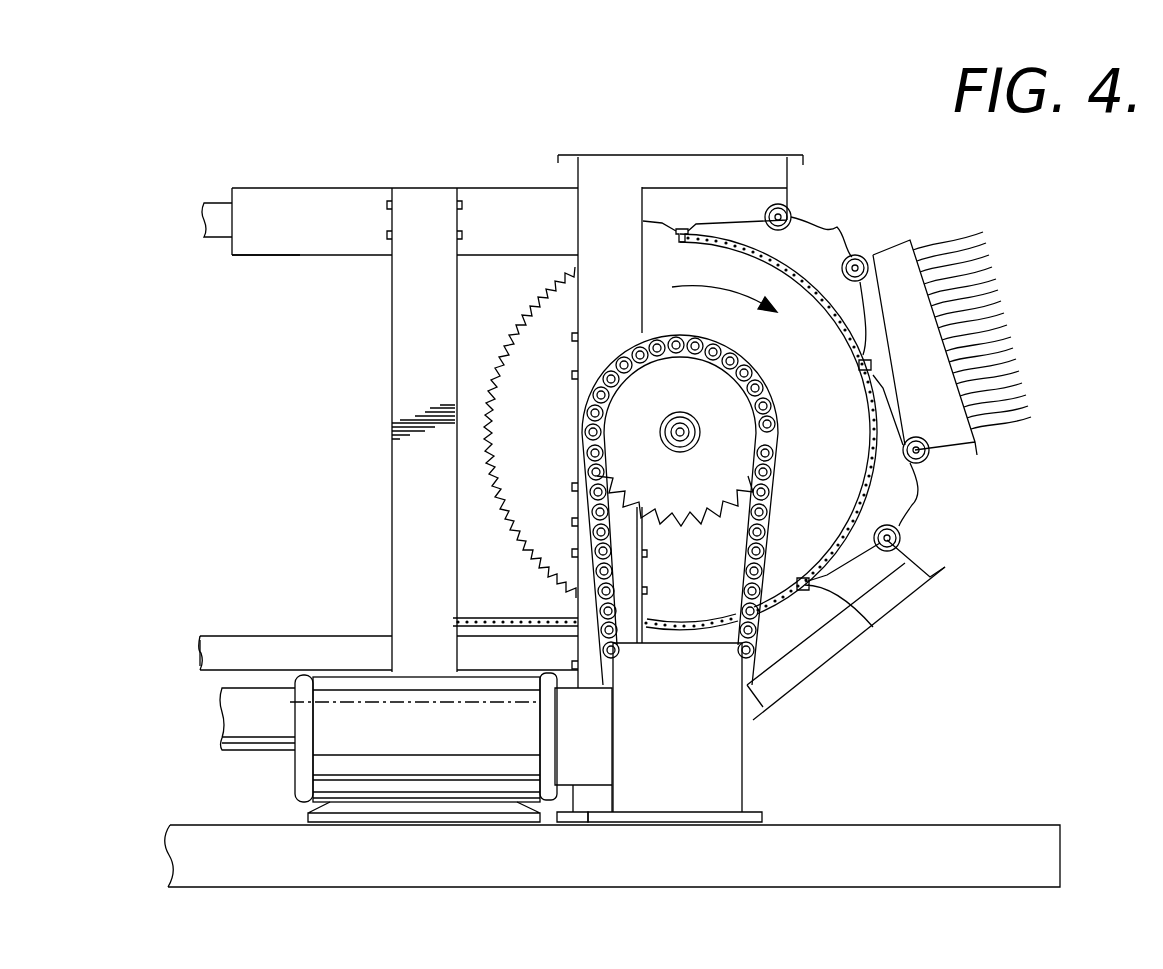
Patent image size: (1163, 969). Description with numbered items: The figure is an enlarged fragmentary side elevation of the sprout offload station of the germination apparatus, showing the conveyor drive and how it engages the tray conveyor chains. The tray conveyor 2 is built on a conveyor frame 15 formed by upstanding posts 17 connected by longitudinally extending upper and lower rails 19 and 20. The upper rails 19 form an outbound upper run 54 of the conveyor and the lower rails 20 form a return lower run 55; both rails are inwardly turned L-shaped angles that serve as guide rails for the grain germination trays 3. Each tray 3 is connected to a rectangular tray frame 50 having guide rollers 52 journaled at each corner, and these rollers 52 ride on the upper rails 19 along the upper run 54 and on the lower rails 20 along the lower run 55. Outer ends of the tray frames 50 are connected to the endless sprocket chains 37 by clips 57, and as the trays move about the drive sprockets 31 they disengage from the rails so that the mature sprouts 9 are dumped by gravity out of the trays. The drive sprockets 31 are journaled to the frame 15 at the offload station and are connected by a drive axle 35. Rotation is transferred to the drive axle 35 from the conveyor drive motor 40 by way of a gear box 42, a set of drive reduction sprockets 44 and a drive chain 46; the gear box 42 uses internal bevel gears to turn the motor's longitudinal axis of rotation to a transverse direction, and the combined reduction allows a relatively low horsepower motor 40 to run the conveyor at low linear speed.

The tray conveyor 2 is at (272, 196).
The grain germination trays 3 is at (560, 175).
The sprouts 9 is at (972, 222).
The conveyor frame 15 is at (385, 348).
The upstanding posts 17 is at (390, 442).
The upper rails 19 is at (217, 228).
The lower rails 20 is at (252, 645).
The drive sprockets 31 is at (490, 475).
The drive axle 35 is at (682, 425).
The sprocket chains 37 is at (507, 618).
The conveyor drive motor 40 is at (323, 767).
The gear box 42 is at (720, 762).
The drive reduction sprockets 44 is at (703, 492).
The drive chain 46 is at (740, 590).
The tray frame 50 is at (710, 208).
The guide rollers 52 is at (864, 373).
The outbound upper run 54 is at (270, 243).
The return lower run 55 is at (200, 658).
The clips 57 is at (682, 229).